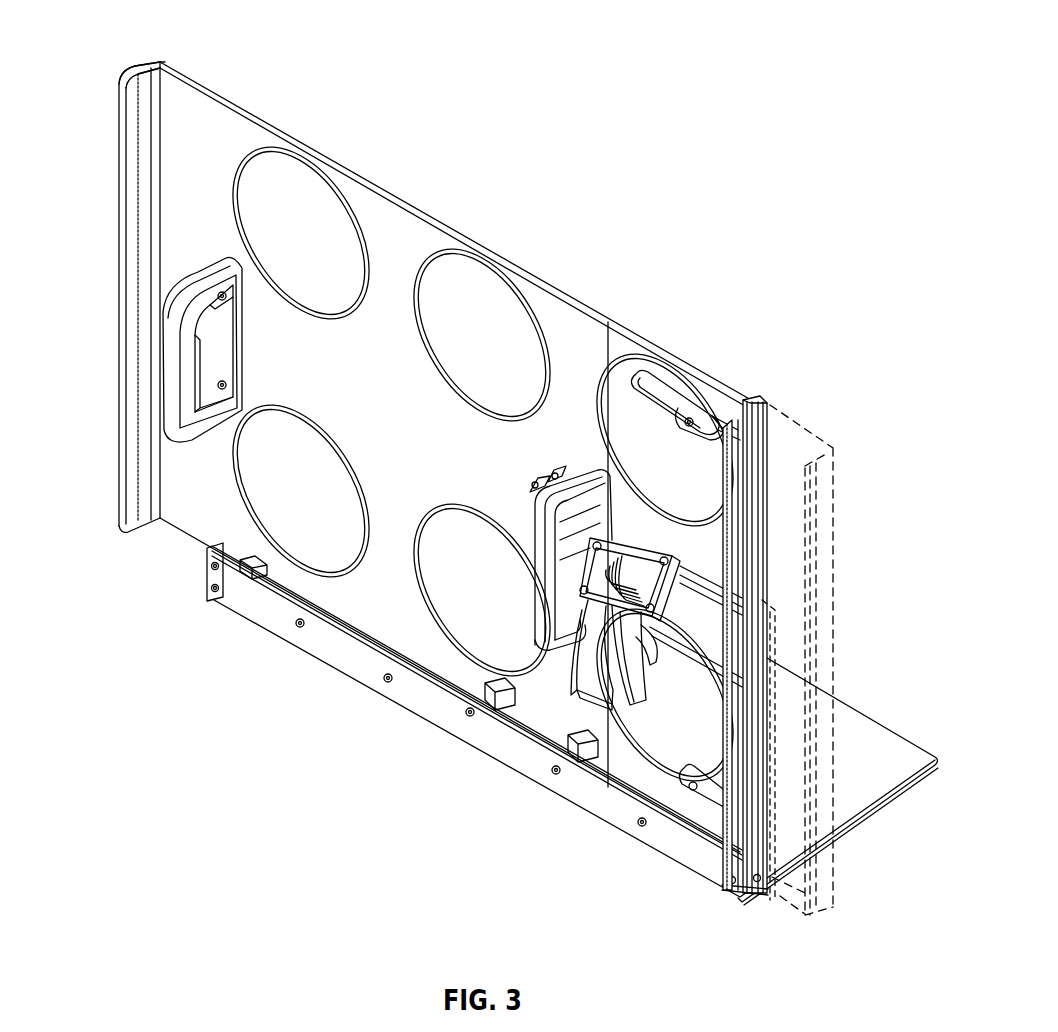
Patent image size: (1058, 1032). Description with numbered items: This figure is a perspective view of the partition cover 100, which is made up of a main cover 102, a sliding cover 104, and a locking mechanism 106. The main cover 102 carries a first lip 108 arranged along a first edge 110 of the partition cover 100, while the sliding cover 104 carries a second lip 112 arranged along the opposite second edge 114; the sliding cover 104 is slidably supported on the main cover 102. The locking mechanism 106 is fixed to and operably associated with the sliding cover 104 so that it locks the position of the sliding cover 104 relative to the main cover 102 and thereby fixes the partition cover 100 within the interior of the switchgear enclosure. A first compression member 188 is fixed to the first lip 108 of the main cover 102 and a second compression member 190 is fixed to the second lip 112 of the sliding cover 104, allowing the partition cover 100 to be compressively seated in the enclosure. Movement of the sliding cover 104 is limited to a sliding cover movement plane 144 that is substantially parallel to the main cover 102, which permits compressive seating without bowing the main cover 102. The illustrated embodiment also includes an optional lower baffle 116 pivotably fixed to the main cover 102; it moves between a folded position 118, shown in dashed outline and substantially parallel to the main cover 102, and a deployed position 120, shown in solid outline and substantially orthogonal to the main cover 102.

The partition cover 100 is at (212, 633).
The main cover 102 is at (393, 243).
The sliding cover 104 is at (637, 423).
The locking mechanism 106 is at (602, 612).
The first lip 108 is at (143, 80).
The first edge 110 is at (121, 302).
The second lip 112 is at (739, 414).
The second edge 114 is at (778, 590).
The lower baffle 116 is at (855, 795).
The folded position 118 is at (778, 647).
The deployed position 120 is at (884, 812).
The sliding cover movement plane 144 is at (823, 532).
The first compression member 188 is at (127, 212).
The second compression member 190 is at (739, 462).